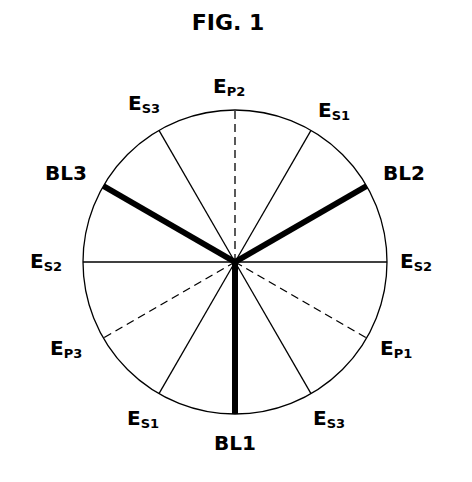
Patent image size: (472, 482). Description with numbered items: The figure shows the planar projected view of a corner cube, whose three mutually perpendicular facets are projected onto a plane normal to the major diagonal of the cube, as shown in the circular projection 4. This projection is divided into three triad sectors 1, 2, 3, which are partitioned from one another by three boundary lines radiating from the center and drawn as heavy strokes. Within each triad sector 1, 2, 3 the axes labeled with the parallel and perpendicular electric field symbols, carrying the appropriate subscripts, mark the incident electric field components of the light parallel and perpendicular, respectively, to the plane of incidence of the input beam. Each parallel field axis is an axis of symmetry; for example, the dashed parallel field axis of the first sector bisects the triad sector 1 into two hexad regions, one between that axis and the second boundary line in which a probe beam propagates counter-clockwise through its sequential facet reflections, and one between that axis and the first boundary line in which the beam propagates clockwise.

The triad sector 1 is at (311, 245).
The triad sector 2 is at (235, 186).
The triad sector 3 is at (159, 300).
The planar projection of the trihedral planes 4 is at (126, 154).